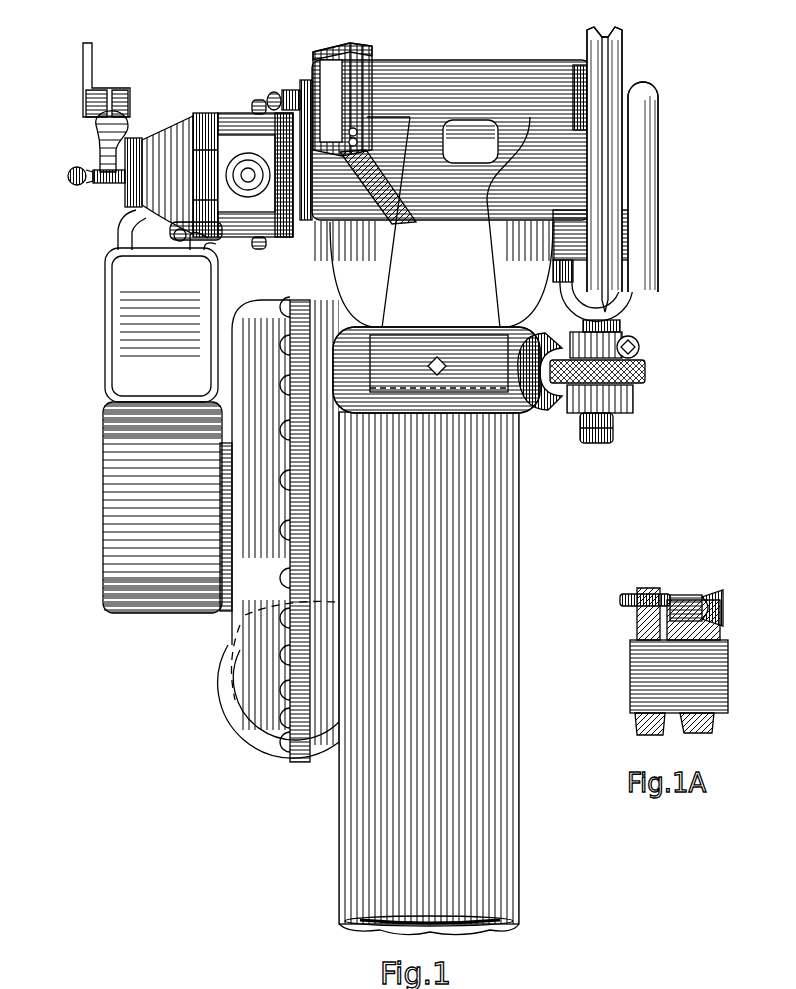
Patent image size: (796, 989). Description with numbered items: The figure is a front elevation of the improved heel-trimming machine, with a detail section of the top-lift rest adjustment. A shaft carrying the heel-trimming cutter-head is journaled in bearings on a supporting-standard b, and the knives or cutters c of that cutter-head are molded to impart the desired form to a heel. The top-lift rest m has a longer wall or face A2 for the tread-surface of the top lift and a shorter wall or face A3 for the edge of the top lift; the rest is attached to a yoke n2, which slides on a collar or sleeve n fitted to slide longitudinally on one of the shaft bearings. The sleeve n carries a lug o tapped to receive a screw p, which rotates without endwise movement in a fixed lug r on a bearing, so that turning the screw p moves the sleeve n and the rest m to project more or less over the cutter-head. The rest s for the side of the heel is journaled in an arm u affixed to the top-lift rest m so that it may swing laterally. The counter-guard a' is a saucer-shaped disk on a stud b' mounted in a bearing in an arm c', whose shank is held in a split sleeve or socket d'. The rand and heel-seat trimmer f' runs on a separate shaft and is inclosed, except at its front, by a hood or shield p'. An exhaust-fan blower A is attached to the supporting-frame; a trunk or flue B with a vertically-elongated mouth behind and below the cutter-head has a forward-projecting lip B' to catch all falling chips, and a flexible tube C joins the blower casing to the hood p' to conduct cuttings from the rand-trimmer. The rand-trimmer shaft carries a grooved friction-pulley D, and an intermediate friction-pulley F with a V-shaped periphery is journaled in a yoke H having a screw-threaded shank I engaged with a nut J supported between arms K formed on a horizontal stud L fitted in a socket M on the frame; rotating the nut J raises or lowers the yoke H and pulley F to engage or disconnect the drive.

In FIG. 1, the exhaust-fan blower A is at (329, 529).
In FIG. 1, the longer wall or face A2 is at (222, 128).
In FIG. 1, the shorter wall or face A3 is at (200, 128).
In FIG. 1, the trunk or flue B is at (167, 507).
In FIG. 1, the lip B' is at (136, 330).
In FIG. 1, the tube C is at (326, 232).
In FIG. 1, the grooved friction-pulley D is at (622, 64).
In FIG. 1, the intermediate friction-pulley F is at (607, 208).
In FIG. 1, the yoke H is at (636, 303).
In FIG. 1, the screw-threaded shank I is at (614, 433).
In FIG. 1, the nut J is at (647, 370).
In FIG. 1, the arms K is at (641, 340).
In FIG. 1, the horizontal stud L is at (518, 374).
In FIG. 1, the socket M is at (463, 355).
In FIG. 1, the counter-guard a' is at (109, 180).
In FIG. 1, the supporting-standard b is at (443, 673).
In FIG. 1, the stud b' is at (83, 177).
In FIG. 1, the knives or cutters c is at (142, 181).
In FIG. 1, the arm c' is at (76, 180).
In FIG. 1, the split sleeve or socket d' is at (117, 80).
In FIG. 1, the rand and heel-seat trimmer f' is at (353, 125).
In FIG. 1, the top-lift rest m is at (205, 175).
In FIG. 1, the collar or sleeve n is at (260, 250).
In FIG. 1A, the collar or sleeve n is at (632, 640).
In FIG. 1, the yoke n2 is at (247, 102).
In FIG. 1, the lug o is at (272, 88).
In FIG. 1A, the lug o is at (650, 588).
In FIG. 1, the screw p is at (266, 85).
In FIG. 1A, the screw p is at (638, 577).
In FIG. 1, the hood or shield p' is at (342, 30).
In FIG. 1A, the fixed lug r is at (690, 594).
In FIG. 1, the rest s is at (182, 242).
In FIG. 1, the arm u is at (205, 232).